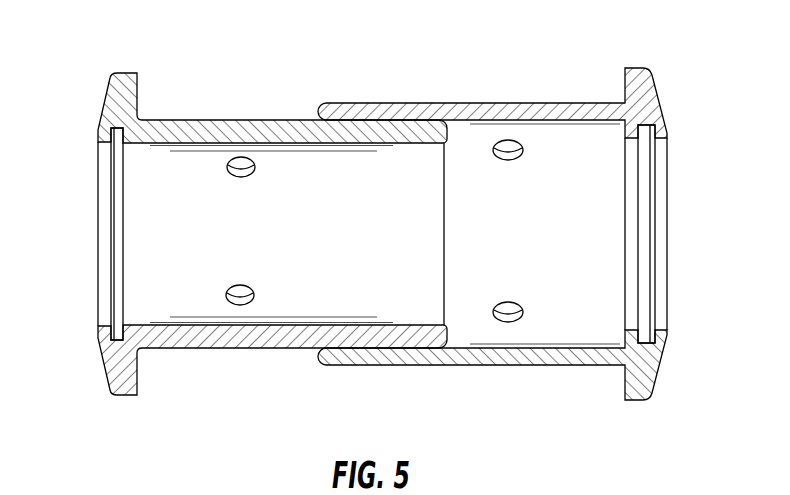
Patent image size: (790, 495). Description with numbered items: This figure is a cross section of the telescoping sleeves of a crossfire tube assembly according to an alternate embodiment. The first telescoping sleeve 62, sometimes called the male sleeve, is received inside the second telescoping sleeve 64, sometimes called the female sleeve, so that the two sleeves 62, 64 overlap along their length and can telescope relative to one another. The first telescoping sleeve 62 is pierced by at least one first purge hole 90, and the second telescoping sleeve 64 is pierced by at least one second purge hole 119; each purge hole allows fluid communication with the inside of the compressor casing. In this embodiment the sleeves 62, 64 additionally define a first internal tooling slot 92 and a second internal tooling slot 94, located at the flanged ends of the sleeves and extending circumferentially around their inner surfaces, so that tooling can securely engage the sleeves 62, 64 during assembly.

The first telescoping sleeve 62 is at (187, 305).
The second telescoping sleeve 64 is at (592, 327).
The first purge hole 90 is at (237, 297).
The first internal tooling slot 92 is at (120, 167).
The second internal tooling slot 94 is at (642, 160).
The second purge hole 119 is at (511, 313).